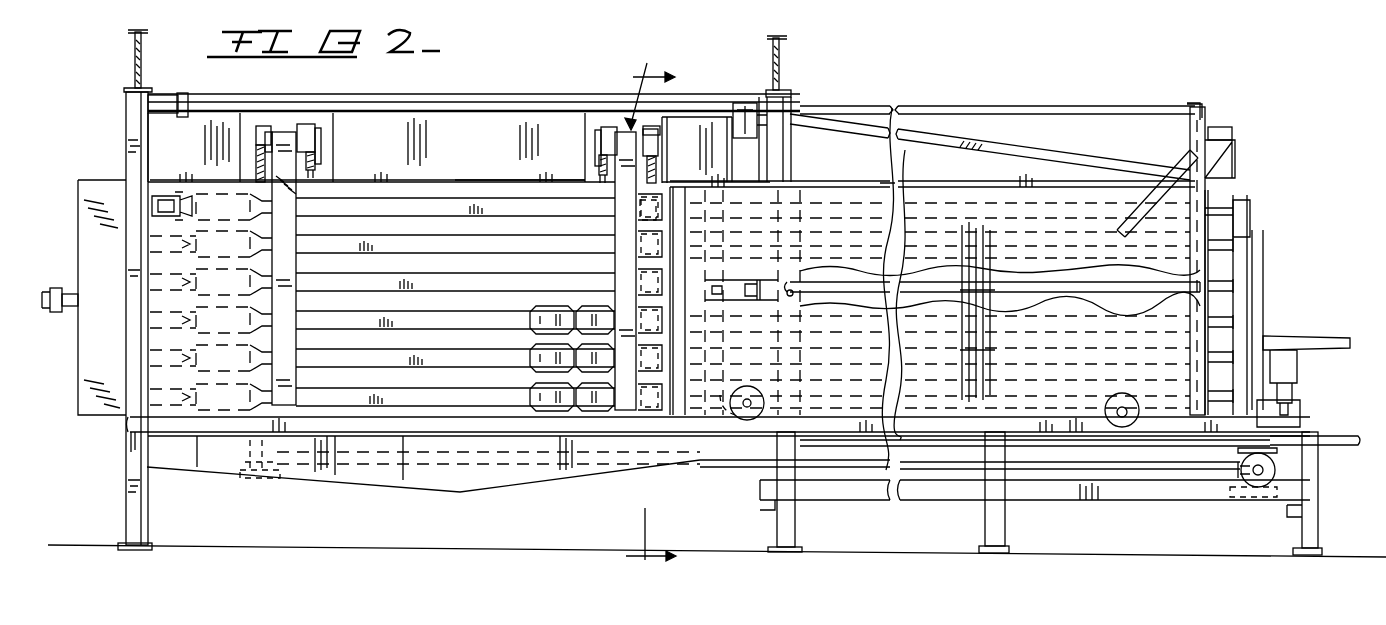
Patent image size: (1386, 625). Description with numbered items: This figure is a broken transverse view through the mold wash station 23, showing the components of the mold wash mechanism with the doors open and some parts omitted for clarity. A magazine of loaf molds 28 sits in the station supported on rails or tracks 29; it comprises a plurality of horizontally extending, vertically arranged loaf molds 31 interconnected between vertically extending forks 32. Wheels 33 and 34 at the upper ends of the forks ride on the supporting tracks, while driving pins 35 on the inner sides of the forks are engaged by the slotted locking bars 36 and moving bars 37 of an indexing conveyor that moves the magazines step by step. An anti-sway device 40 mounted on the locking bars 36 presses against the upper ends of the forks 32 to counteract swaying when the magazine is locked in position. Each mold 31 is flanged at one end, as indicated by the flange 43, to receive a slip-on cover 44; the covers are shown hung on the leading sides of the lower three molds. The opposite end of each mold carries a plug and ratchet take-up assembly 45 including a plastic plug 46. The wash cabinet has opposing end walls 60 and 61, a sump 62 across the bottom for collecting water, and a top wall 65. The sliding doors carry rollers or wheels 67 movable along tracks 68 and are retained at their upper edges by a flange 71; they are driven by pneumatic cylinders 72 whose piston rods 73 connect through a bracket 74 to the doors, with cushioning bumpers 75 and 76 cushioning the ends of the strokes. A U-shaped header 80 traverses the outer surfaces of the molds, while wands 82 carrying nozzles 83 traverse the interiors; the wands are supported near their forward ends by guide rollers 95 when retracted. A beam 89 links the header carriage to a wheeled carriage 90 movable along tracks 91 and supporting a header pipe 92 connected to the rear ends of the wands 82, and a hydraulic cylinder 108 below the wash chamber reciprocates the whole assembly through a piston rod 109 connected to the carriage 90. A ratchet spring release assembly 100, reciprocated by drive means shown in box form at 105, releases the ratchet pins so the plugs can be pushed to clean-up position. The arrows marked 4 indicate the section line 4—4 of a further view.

The section line 4- 4 is at (649, 305).
The mold wash station 23 is at (474, 62).
The magazine of loaf molds 28 is at (650, 126).
The rails or tracks 29 is at (256, 172).
The loaf molds 31 is at (437, 283).
The vertically extending forks 32 is at (284, 247).
The wheels 33 is at (259, 127).
The wheels 34 is at (664, 128).
The driving pins 35 is at (316, 166).
The slotted locking bars 36 is at (314, 150).
The moving bars 37 is at (319, 160).
The anti-sway device 40 is at (306, 124).
The flange 43 is at (658, 197).
The slip-on cover 44 is at (590, 304).
The plug and ratchet take-up assembly 45 is at (218, 414).
The plastic plug 46 is at (636, 224).
The end wall 60 is at (125, 136).
The end wall 61 is at (780, 138).
The sump 62 is at (338, 484).
The top wall 65 is at (166, 96).
The rollers or wheels 67 is at (1127, 397).
The tracks 68 is at (1020, 440).
The flange 71 is at (470, 180).
The pneumatic cylinders 72 is at (436, 110).
The piston rods 73 is at (1053, 106).
The bracket 74 is at (1203, 130).
The cushioning bumper 75 is at (741, 102).
The cushioning bumper 76 is at (1222, 130).
The U-shaped header 80 is at (714, 282).
The wands 82 is at (872, 281).
The nozzles 83 is at (780, 232).
The beam 89 is at (1020, 440).
The wheeled carriage 90 is at (1240, 472).
The tracks 91 is at (1178, 482).
The header pipe 92 is at (1252, 214).
The guide rollers 95 is at (802, 284).
The ratchet spring release assembly 100 is at (156, 192).
The drive means 105 is at (97, 198).
The hydraulic cylinder 108 is at (570, 462).
The piston rod 109 is at (912, 470).